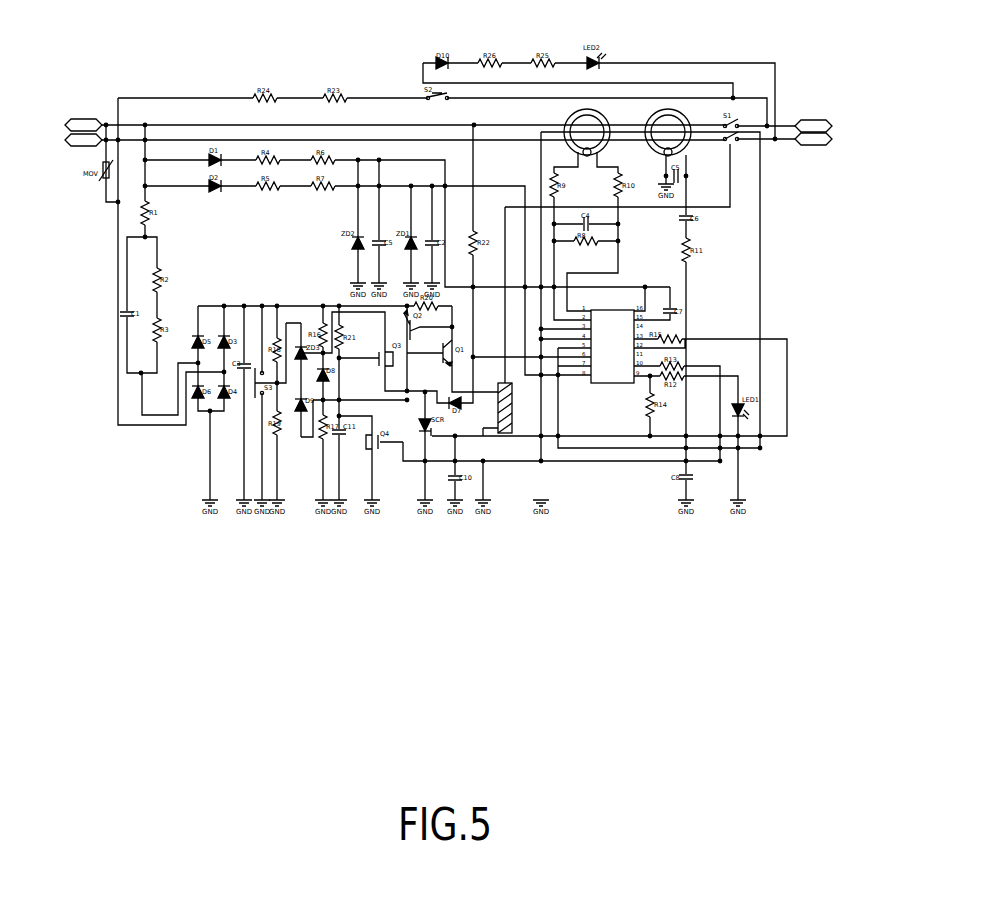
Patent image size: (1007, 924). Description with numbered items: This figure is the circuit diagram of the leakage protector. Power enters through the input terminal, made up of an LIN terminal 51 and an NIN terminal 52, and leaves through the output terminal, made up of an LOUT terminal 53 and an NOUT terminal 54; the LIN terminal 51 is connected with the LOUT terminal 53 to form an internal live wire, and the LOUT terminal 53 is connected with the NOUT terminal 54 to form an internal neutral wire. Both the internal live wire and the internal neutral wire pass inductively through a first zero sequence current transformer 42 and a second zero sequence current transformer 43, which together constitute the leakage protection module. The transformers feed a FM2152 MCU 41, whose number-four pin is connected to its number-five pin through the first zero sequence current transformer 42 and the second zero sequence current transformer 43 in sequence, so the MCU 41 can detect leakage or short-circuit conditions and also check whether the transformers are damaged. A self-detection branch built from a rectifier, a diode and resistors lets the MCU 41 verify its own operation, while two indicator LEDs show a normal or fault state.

The MCU 41 is at (614, 394).
The first zero sequence current transformer 42 is at (607, 107).
The second zero sequence current transformer 43 is at (683, 107).
The LIN terminal 51 is at (62, 120).
The NIN terminal 52 is at (62, 136).
The LOUT terminal 53 is at (832, 123).
The NOUT terminal 54 is at (832, 139).